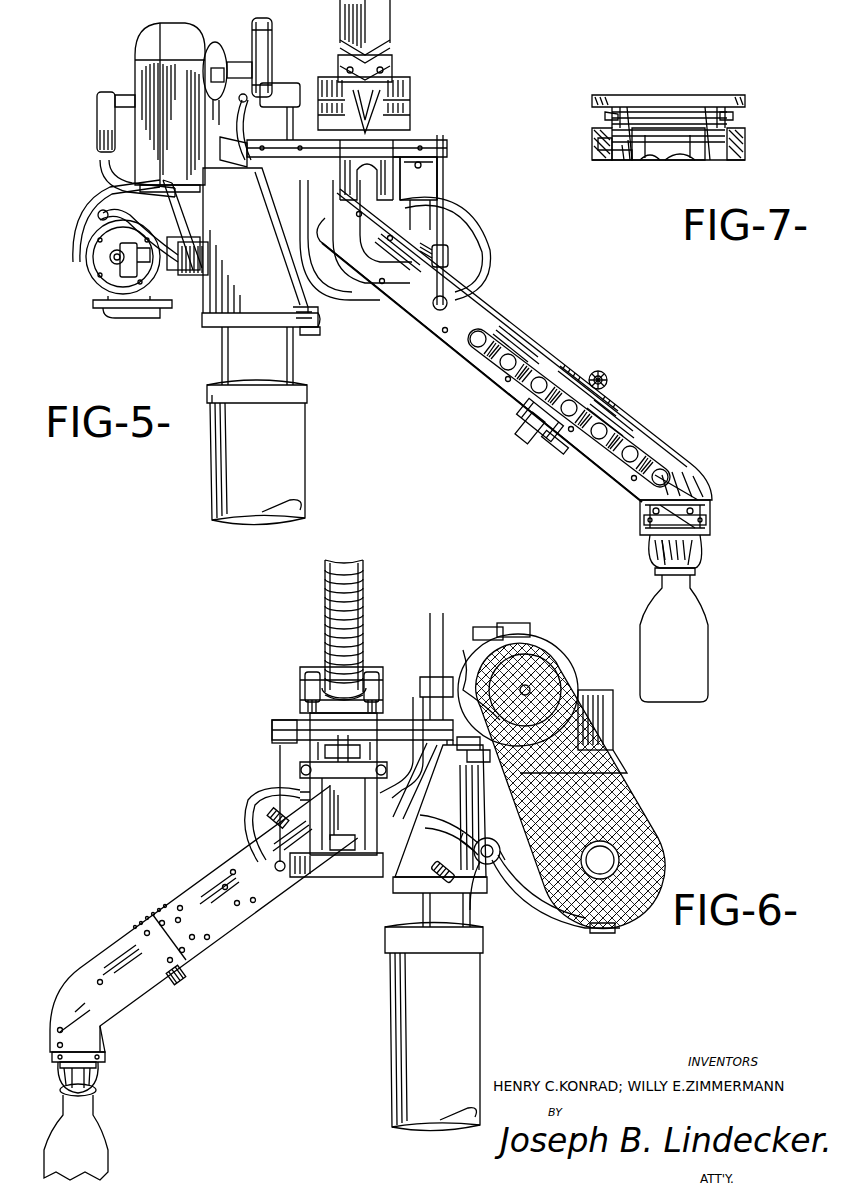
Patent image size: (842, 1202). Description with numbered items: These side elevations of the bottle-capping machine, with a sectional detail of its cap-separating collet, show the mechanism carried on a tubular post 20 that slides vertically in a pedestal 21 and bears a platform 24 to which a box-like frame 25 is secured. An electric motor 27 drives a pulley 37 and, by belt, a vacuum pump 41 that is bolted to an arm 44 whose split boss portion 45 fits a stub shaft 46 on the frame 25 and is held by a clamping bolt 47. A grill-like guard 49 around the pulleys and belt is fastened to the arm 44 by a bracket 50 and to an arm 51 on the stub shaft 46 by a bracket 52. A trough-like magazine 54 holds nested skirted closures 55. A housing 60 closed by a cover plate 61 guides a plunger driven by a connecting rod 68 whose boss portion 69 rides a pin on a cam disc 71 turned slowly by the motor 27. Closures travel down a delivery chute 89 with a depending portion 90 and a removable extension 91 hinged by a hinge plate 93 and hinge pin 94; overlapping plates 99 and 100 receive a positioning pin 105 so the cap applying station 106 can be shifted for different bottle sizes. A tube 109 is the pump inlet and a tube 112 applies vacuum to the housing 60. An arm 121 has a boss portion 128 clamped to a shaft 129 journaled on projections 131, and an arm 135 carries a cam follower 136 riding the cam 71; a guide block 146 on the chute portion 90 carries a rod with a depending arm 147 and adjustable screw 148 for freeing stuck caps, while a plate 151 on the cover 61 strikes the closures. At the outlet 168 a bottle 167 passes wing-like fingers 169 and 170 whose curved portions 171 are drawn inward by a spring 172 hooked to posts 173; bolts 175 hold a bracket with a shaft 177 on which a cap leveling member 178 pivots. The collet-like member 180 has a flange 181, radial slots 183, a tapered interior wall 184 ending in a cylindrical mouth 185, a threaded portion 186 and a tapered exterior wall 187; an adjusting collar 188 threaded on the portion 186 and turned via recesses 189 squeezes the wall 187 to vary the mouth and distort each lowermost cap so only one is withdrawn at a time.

In FIG. 5, the tubular member or post 20 is at (228, 360).
In FIG. 5, the pedestal or frame member 21 is at (218, 487).
In FIG. 6, the pedestal or frame member 21 is at (392, 1068).
In FIG. 5, the platform or uniplanar portion 24 is at (310, 336).
In FIG. 5, the supplemental hollow or box-like frame 25 is at (320, 308).
In FIG. 6, the supplemental hollow or box-like frame 25 is at (398, 890).
In FIG. 5, the electrically actuated motor 27 is at (160, 38).
In FIG. 6, the driving pulley 37 is at (535, 672).
In FIG. 5, the vacuum pump 41 is at (107, 279).
In FIG. 5, the bracket or arm 44 is at (130, 318).
In FIG. 6, the bracket or arm 44 is at (560, 912).
In FIG. 6, the split boss portion 45 is at (492, 862).
In FIG. 6, the pin or stub shaft 46 is at (487, 866).
In FIG. 6, the clamping bolt 47 is at (474, 822).
In FIG. 6, the grill-like guard or shield 49 is at (640, 810).
In FIG. 6, the bracket 50 is at (600, 934).
In FIG. 6, the arm 51 is at (480, 790).
In FIG. 6, the bracket 52 is at (625, 773).
In FIG. 5, the magazine 54 is at (390, 30).
In FIG. 6, the skirted caps or closures 55 is at (330, 610).
In FIG. 6, the housing or enclosure 60 is at (340, 872).
In FIG. 6, the cover plate 61 is at (335, 785).
In FIG. 5, the pitman or connecting rod 68 is at (318, 125).
In FIG. 5, the hollow boss portion 69 is at (524, 320).
In FIG. 5, the cam or cam disc 71 is at (270, 36).
In FIG. 6, the closure delivery chute 89 is at (242, 944).
In FIG. 5, the angularly depending portion 90 is at (490, 378).
In FIG. 5, the chute extension 91 is at (652, 442).
In FIG. 6, the chute extension 91 is at (150, 1000).
In FIG. 5, the hinge plate 93 is at (613, 392).
In FIG. 5, the pivot or hinge pin 94 is at (604, 378).
In FIG. 5, the plate 99 is at (530, 412).
In FIG. 5, the plate 100 is at (578, 455).
In FIG. 5, the securing or positioning pin 105 is at (536, 446).
In FIG. 5, the closure applying station 106 is at (635, 549).
In FIG. 5, the tube 109 is at (110, 270).
In FIG. 6, the tube 109 is at (460, 845).
In FIG. 6, the tube 112 is at (246, 800).
In FIG. 5, the arm or member 121 is at (437, 183).
In FIG. 5, the boss portion 128 is at (440, 150).
In FIG. 5, the shaft 129 is at (400, 141).
In FIG. 5, the upwardly extending projections 131 is at (437, 165).
In FIG. 5, the upwardly extending arm 135 is at (252, 118).
In FIG. 6, the cam follower or roller 136 is at (443, 645).
In FIG. 5, the guiding means or block 146 is at (450, 262).
In FIG. 5, the depending arm 147 is at (447, 280).
In FIG. 5, the screw 148 is at (447, 300).
In FIG. 6, the plate 151 is at (330, 760).
In FIG. 5, the bottle 167 is at (692, 590).
In FIG. 6, the bottle 167 is at (95, 1135).
In FIG. 5, the closure discharge or serving outlet 168 is at (625, 526).
In FIG. 5, the wing-like member 169 is at (706, 532).
In FIG. 6, the wing-like member 169 is at (98, 1075).
In FIG. 6, the wing-like member 170 is at (100, 1065).
In FIG. 6, the curved portions 171 is at (96, 1090).
In FIG. 6, the contractile spring 172 is at (105, 1050).
In FIG. 6, the posts 173 is at (100, 1058).
In FIG. 5, the bolts 175 is at (710, 512).
In FIG. 5, the shaft 177 is at (700, 502).
In FIG. 5, the cap leveling member 178 is at (700, 545).
In FIG. 7, the hollow member 180 is at (619, 172).
In FIG. 7, the flange portion 181 is at (612, 105).
In FIG. 6, the flange portion 181 is at (335, 676).
In FIG. 7, the kerfs or slots 183 is at (652, 162).
In FIG. 7, the tapered interior wall 184 is at (612, 112).
In FIG. 7, the cylindrical mouth or outlet 185 is at (628, 162).
In FIG. 7, the threaded portion 186 is at (727, 125).
In FIG. 7, the tapered exterior wall 187 is at (730, 156).
In FIG. 7, the adjusting collar 188 is at (598, 145).
In FIG. 6, the adjusting collar 188 is at (305, 688).
In FIG. 7, the recesses 189 is at (592, 152).